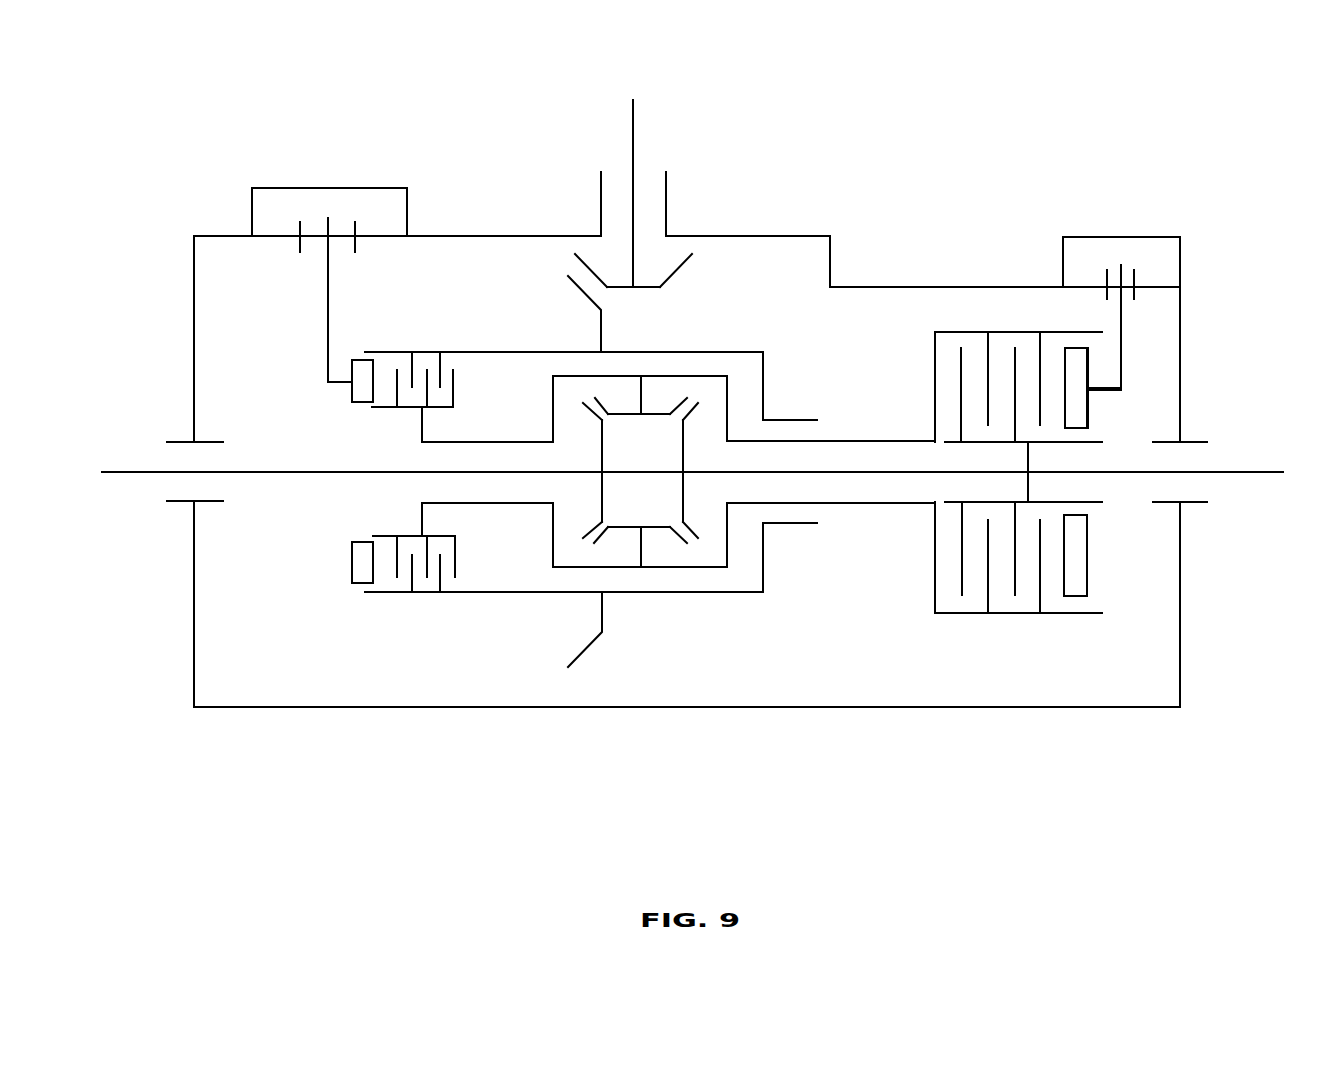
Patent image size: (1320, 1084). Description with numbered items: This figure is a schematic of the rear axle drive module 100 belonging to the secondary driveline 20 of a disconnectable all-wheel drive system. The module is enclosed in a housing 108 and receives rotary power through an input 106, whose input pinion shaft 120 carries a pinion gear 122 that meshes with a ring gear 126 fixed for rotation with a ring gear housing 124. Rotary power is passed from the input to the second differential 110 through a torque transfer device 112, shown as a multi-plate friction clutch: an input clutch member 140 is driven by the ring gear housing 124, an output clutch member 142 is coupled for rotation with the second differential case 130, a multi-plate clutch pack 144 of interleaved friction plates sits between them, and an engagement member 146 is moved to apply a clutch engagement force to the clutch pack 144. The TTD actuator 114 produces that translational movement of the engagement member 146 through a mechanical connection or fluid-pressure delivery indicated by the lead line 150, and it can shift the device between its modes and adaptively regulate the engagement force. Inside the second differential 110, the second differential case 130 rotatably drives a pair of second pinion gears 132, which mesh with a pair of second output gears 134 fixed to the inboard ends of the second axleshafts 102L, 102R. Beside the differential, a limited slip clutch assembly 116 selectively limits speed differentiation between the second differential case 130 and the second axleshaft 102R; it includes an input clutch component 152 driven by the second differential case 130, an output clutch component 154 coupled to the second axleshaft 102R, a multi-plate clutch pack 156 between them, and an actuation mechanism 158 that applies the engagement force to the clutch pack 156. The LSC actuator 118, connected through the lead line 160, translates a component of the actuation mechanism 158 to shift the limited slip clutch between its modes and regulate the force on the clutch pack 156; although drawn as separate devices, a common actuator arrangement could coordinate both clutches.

The secondary driveline 20 is at (912, 194).
The rear axle drive module 100 is at (730, 508).
The second axleshaft 102L is at (122, 470).
The second axleshaft 102R is at (1250, 468).
The input 106 is at (522, 282).
The housing 108 is at (1180, 615).
The second differential 110 is at (735, 608).
The torque transfer device 112 is at (333, 586).
The TTD actuator 114 is at (300, 180).
The limited slip clutch assembly 116 is at (990, 315).
The LSC actuator 118 is at (1177, 232).
The input pinion shaft 120 is at (634, 148).
The pinion gear 122 is at (670, 278).
The ring gear housing 124 is at (717, 353).
The ring gear 126 is at (587, 648).
The second differential case 130 is at (728, 392).
The second pinion gears 132 is at (620, 414).
The second output gears 134 is at (680, 452).
The input clutch member 140 is at (493, 352).
The output clutch member 142 is at (445, 440).
The multi-plate clutch pack 144 is at (448, 587).
The engagement member 146 is at (355, 556).
The lead line 150 is at (328, 280).
The input clutch component 152 is at (868, 503).
The output clutch component 154 is at (1062, 446).
The multi-plate clutch pack 156 is at (967, 585).
The actuation mechanism 158 is at (1075, 585).
The lead line 160 is at (1121, 330).